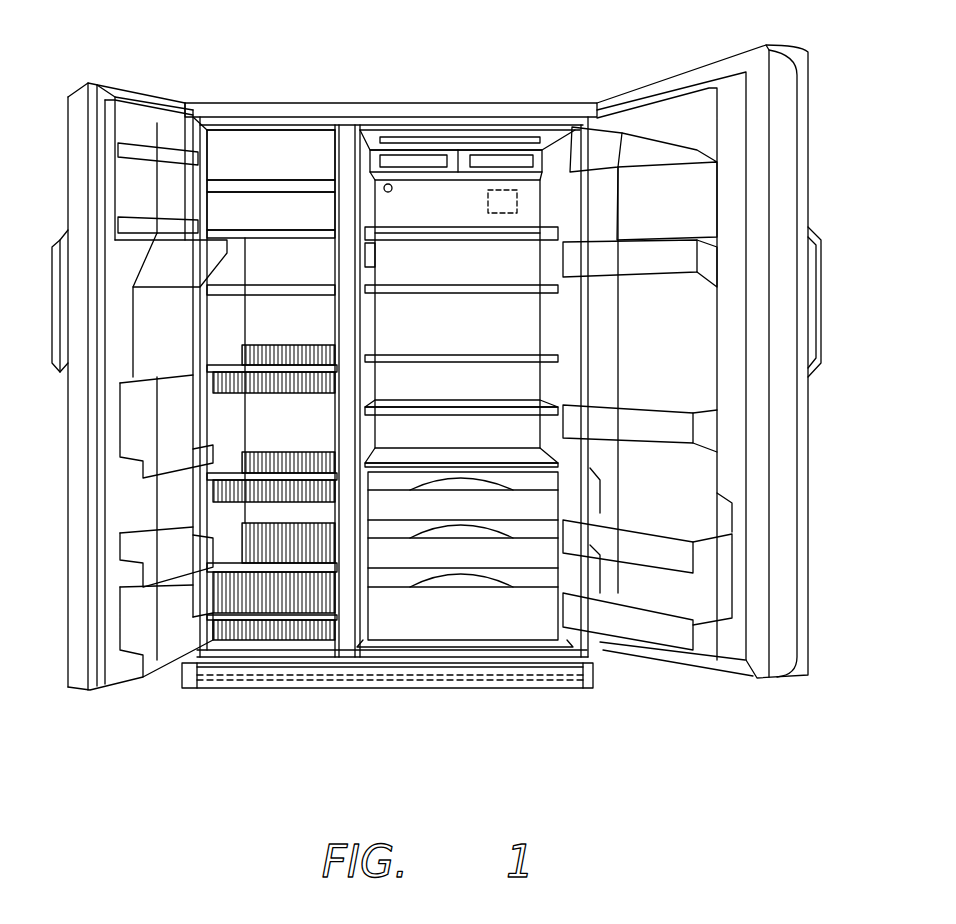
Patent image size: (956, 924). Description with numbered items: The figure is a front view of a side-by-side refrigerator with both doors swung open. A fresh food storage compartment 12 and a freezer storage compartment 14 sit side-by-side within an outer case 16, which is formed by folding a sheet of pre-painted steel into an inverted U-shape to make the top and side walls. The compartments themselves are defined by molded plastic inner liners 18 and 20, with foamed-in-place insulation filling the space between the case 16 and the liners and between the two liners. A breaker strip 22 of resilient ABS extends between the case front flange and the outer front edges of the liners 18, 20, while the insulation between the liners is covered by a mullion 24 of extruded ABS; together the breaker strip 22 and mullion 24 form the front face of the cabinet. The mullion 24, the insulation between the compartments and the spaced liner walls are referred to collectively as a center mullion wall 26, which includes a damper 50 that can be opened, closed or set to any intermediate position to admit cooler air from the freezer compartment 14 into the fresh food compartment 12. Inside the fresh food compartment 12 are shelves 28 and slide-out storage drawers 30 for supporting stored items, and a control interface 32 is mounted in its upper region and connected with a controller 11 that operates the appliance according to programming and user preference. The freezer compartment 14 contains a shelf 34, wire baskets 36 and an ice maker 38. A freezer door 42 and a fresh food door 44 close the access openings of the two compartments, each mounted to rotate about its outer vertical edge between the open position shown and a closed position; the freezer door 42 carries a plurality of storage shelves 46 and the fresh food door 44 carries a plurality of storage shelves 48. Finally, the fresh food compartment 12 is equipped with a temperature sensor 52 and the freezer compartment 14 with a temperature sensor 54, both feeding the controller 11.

The controller 11 is at (517, 200).
The fresh food storage compartment 12 is at (547, 128).
The freezer storage compartment 14 is at (311, 156).
The outer case 16 is at (417, 98).
The inner liner 18 is at (477, 133).
The inner liner 20 is at (257, 130).
The breaker strip 22 is at (523, 110).
The mullion 24 is at (348, 638).
The center mullion wall 26 is at (365, 323).
The shelves 28 is at (476, 293).
The slide-out storage drawers 30 is at (430, 510).
The control interface 32 is at (507, 153).
The shelf 34 is at (257, 297).
The wire baskets 36 is at (230, 477).
The ice maker 38 is at (267, 217).
The freezer door 42 is at (135, 87).
The fresh food door 44 is at (809, 132).
The storage shelves 46 is at (133, 667).
The storage shelves 48 is at (643, 423).
The damper 50 is at (376, 267).
The temperature sensor 52 is at (392, 192).
The temperature sensor 54 is at (260, 337).